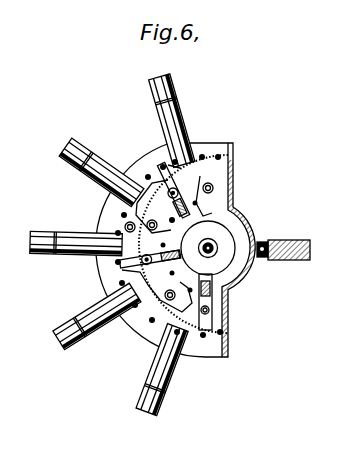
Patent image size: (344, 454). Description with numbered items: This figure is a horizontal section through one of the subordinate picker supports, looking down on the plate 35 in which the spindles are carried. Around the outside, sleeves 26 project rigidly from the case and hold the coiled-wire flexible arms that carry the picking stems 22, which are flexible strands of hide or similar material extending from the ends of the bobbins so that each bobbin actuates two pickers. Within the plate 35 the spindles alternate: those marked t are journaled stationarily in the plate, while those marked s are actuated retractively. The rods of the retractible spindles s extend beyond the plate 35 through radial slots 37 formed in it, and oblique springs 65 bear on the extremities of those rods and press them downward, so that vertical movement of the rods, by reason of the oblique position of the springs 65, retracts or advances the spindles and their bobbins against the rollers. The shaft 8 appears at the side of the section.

The sleeve 26 is at (177, 99).
The plate 35 is at (220, 197).
The oblique spring 65 is at (207, 248).
The radial slot 37 is at (188, 321).
The picking stem 22 is at (189, 247).
The stationary spindle t is at (171, 241).
The retractible spindle s is at (183, 257).
The shaft 8 is at (275, 261).